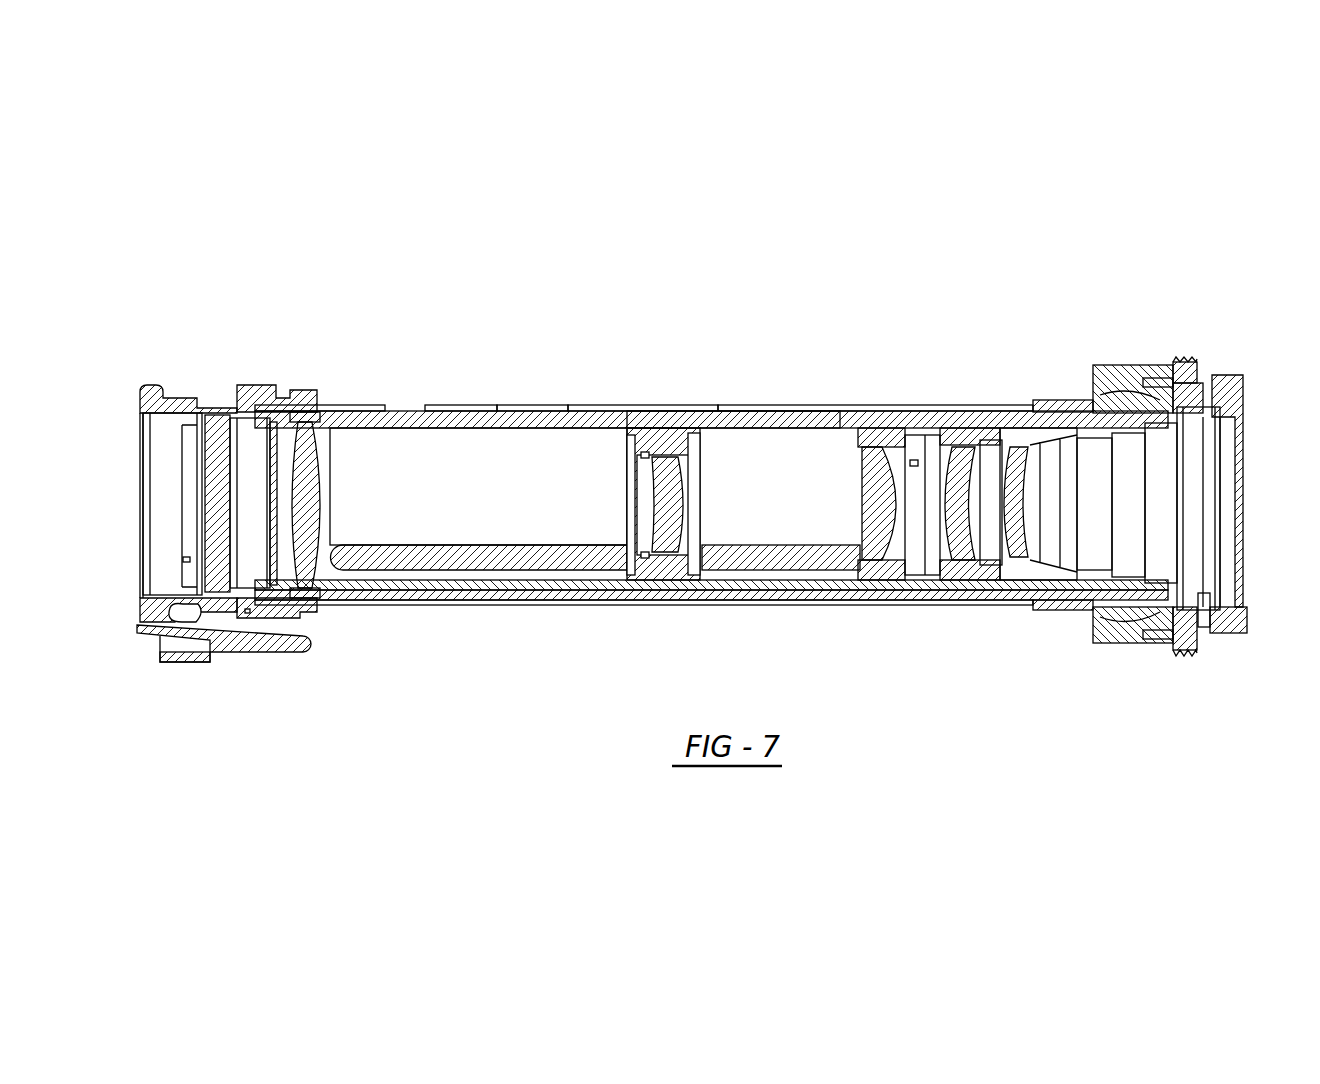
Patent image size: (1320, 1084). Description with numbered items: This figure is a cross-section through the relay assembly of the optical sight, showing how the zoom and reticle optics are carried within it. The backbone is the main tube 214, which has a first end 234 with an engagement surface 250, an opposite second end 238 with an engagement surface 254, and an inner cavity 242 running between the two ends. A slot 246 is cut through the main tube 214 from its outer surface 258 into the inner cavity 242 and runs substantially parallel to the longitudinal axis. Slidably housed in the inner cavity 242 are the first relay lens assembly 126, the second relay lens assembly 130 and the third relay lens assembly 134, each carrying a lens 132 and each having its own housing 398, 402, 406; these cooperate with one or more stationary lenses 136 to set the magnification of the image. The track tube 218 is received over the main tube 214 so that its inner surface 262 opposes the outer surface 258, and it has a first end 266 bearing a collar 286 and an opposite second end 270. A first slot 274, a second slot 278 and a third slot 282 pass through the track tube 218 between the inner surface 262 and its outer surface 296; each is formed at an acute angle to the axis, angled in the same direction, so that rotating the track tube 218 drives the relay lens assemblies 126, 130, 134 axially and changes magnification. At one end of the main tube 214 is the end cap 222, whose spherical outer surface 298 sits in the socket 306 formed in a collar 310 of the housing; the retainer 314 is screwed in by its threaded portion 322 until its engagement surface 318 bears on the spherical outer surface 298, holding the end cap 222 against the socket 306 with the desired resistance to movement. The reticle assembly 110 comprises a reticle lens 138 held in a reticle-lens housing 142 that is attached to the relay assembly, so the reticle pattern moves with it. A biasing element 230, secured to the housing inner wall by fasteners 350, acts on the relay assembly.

The reticle assembly 110 is at (140, 372).
The reticle-lens housing 142 is at (177, 405).
The reticle lens 138 is at (212, 410).
The second end of the track tube 270 is at (257, 407).
The second end of the main tube 238 is at (277, 412).
The stationary lenses 136 is at (310, 412).
The inner cavity of the main tube 242 is at (363, 462).
The third slot 282 is at (413, 403).
The outer surface of the main tube 258 is at (452, 412).
The track tube 218 is at (498, 412).
The inner surface of the track tube 262 is at (548, 410).
The second slot 278 is at (572, 407).
The outer surface of the track tube 296 is at (658, 436).
The third relay lens assembly 134 is at (670, 470).
The lens 132 is at (744, 402).
The first slot 274 is at (765, 405).
The second relay lens assembly 130 is at (872, 443).
The first relay lens assembly 126 is at (980, 440).
The first end of the track tube 266 is at (1042, 405).
The collar 286 is at (1072, 404).
The end cap 222 is at (1113, 393).
The socket 306 is at (1132, 392).
The spherical outer surface 298 is at (1165, 390).
The first end of the main tube 234 is at (1213, 405).
The engagement surface 250 is at (1225, 410).
The fasteners 350 is at (183, 617).
The biasing element 230 is at (243, 660).
The engagement surface 254 is at (265, 598).
The slot 246 is at (387, 562).
The main tube 214 is at (520, 597).
The housing of the third relay lens assembly 406 is at (670, 574).
The housing of the second relay lens assembly 402 is at (880, 577).
The housing of the first relay lens assembly 398 is at (978, 567).
The collar 310 is at (1155, 633).
The threaded portion 322 is at (1185, 647).
The engagement surface 318 is at (1178, 617).
The retainer 314 is at (1232, 632).